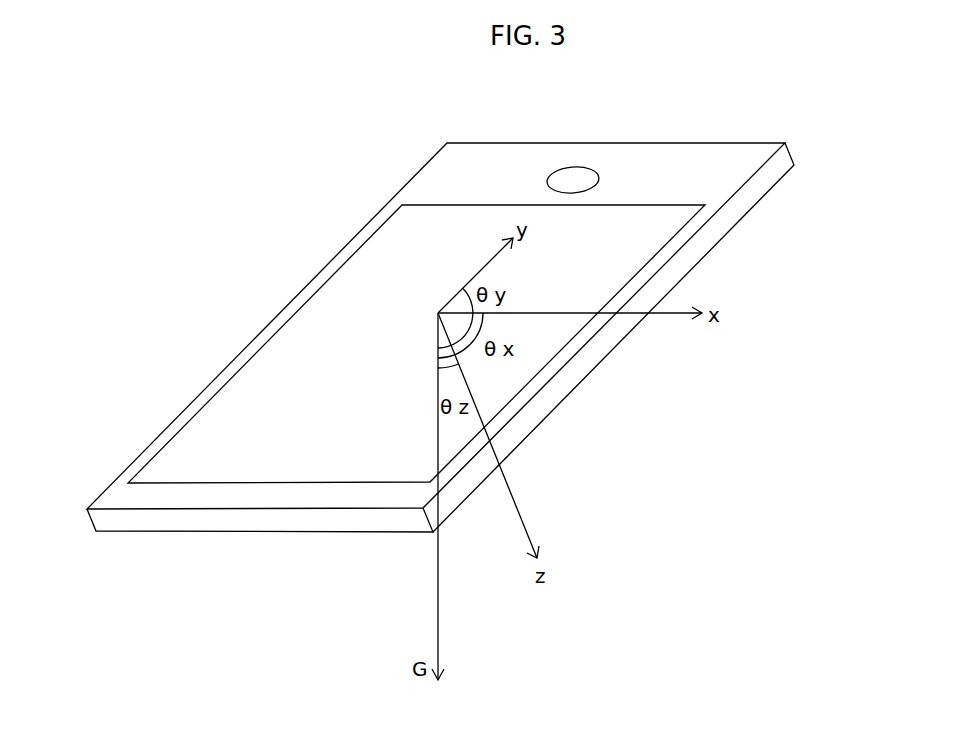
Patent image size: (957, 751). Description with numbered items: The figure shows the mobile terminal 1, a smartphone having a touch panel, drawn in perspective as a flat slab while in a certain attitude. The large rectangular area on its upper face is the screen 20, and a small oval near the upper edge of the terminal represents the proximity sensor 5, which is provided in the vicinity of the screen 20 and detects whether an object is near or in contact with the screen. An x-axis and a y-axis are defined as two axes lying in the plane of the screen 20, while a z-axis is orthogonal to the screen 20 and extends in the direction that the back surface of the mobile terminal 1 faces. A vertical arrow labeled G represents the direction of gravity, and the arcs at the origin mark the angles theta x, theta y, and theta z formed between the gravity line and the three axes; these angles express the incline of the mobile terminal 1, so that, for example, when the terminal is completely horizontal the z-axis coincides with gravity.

The mobile terminal 1 is at (312, 280).
The screen 20 is at (293, 352).
The proximity sensor 5 is at (580, 167).